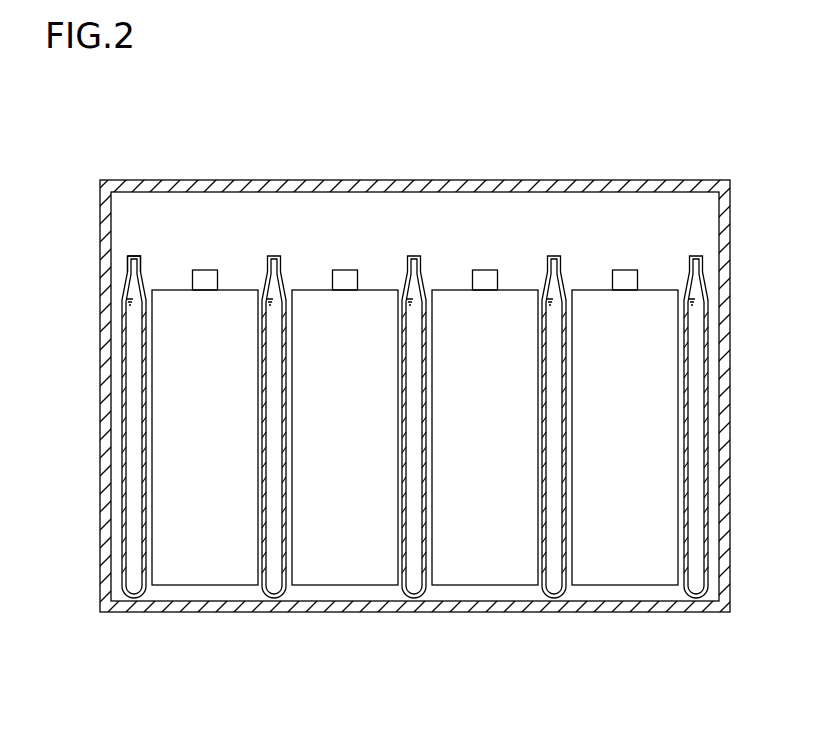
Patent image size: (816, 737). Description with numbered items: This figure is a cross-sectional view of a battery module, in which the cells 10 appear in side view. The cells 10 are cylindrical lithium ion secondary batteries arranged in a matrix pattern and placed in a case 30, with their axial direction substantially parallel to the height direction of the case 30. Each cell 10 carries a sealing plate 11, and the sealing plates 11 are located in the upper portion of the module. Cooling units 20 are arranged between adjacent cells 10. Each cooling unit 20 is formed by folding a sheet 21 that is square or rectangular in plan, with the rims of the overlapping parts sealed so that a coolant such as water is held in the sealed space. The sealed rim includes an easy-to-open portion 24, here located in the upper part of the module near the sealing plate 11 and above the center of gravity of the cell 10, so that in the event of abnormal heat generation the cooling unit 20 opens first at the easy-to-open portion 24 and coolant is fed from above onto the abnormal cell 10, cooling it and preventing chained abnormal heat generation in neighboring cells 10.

The cell 10 is at (212, 562).
The sealing plate 11 is at (202, 270).
The cooling unit 20 is at (379, 364).
The sheet 21 is at (125, 370).
The easy-to-open portion 24 is at (125, 241).
The case 30 is at (156, 612).